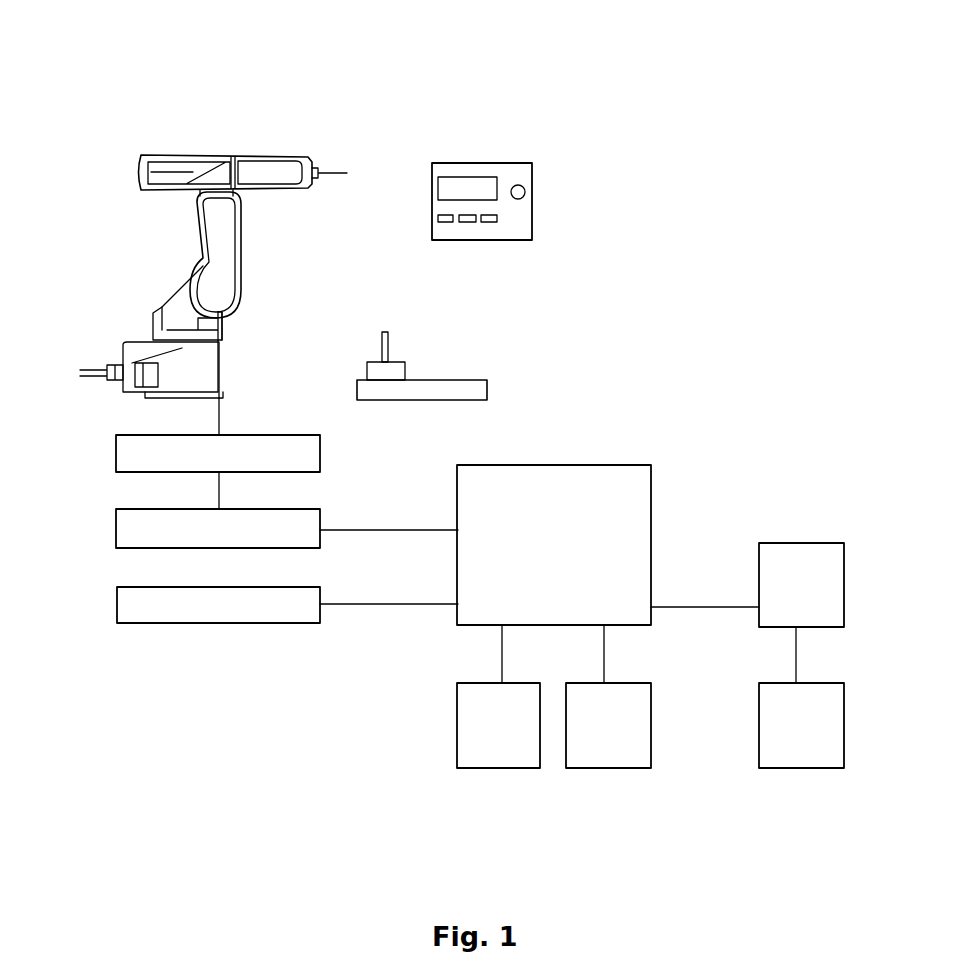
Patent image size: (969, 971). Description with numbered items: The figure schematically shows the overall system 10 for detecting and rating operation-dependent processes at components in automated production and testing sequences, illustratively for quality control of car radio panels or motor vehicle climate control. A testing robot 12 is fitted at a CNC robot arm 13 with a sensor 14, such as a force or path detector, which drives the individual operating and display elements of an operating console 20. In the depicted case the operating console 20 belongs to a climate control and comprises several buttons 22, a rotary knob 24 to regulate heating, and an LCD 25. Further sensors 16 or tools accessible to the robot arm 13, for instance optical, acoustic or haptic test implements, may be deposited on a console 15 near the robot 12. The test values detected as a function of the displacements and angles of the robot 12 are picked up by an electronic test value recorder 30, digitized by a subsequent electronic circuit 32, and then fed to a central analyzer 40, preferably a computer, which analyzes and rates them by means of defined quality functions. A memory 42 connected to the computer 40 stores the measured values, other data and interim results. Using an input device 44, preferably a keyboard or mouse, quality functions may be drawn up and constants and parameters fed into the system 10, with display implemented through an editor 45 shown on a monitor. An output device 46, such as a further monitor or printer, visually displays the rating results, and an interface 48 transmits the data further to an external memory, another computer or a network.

The overall system 10 is at (700, 156).
The testing robot 12 is at (185, 130).
The CNC robot arm 13 is at (256, 162).
The sensor 14 is at (328, 170).
The console 15 is at (468, 385).
The further sensors 16 is at (385, 345).
The operating console 20 is at (466, 125).
The keys/buttons 22 is at (466, 222).
The rotary knob 24 is at (518, 185).
The LCD 25 is at (478, 188).
The electronic test value recorder 30 is at (203, 468).
The electronic circuit 32 is at (203, 544).
The central analyzer 40 is at (542, 566).
The memory 42 is at (203, 619).
The input device 44 is at (785, 743).
The editor 45 is at (785, 603).
The output device 46 is at (591, 743).
The interface 48 is at (483, 743).